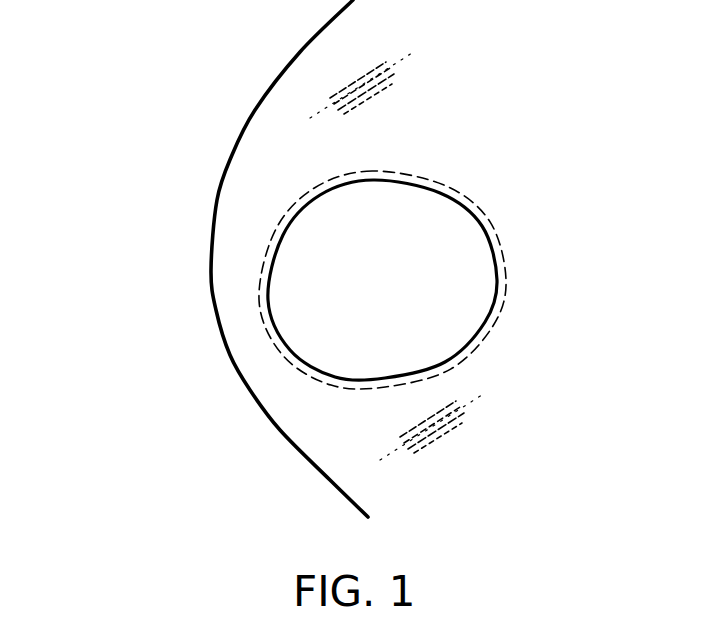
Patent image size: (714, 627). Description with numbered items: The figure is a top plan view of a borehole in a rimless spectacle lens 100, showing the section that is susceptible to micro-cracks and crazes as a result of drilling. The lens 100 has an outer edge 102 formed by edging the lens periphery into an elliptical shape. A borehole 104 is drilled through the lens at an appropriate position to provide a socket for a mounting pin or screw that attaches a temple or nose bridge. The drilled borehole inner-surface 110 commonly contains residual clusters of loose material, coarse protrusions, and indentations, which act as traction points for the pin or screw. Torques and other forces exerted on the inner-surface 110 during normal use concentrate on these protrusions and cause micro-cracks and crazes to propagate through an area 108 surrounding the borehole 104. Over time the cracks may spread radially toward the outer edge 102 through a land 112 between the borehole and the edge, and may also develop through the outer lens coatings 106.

The rimless spectacle lens 100 is at (236, 117).
The outer edge 102 is at (213, 212).
The borehole 104 is at (387, 272).
The outer lens coatings 106 is at (538, 119).
The area around the borehole 108 is at (360, 392).
The borehole inner-surface 110 is at (486, 340).
The land 112 is at (224, 296).